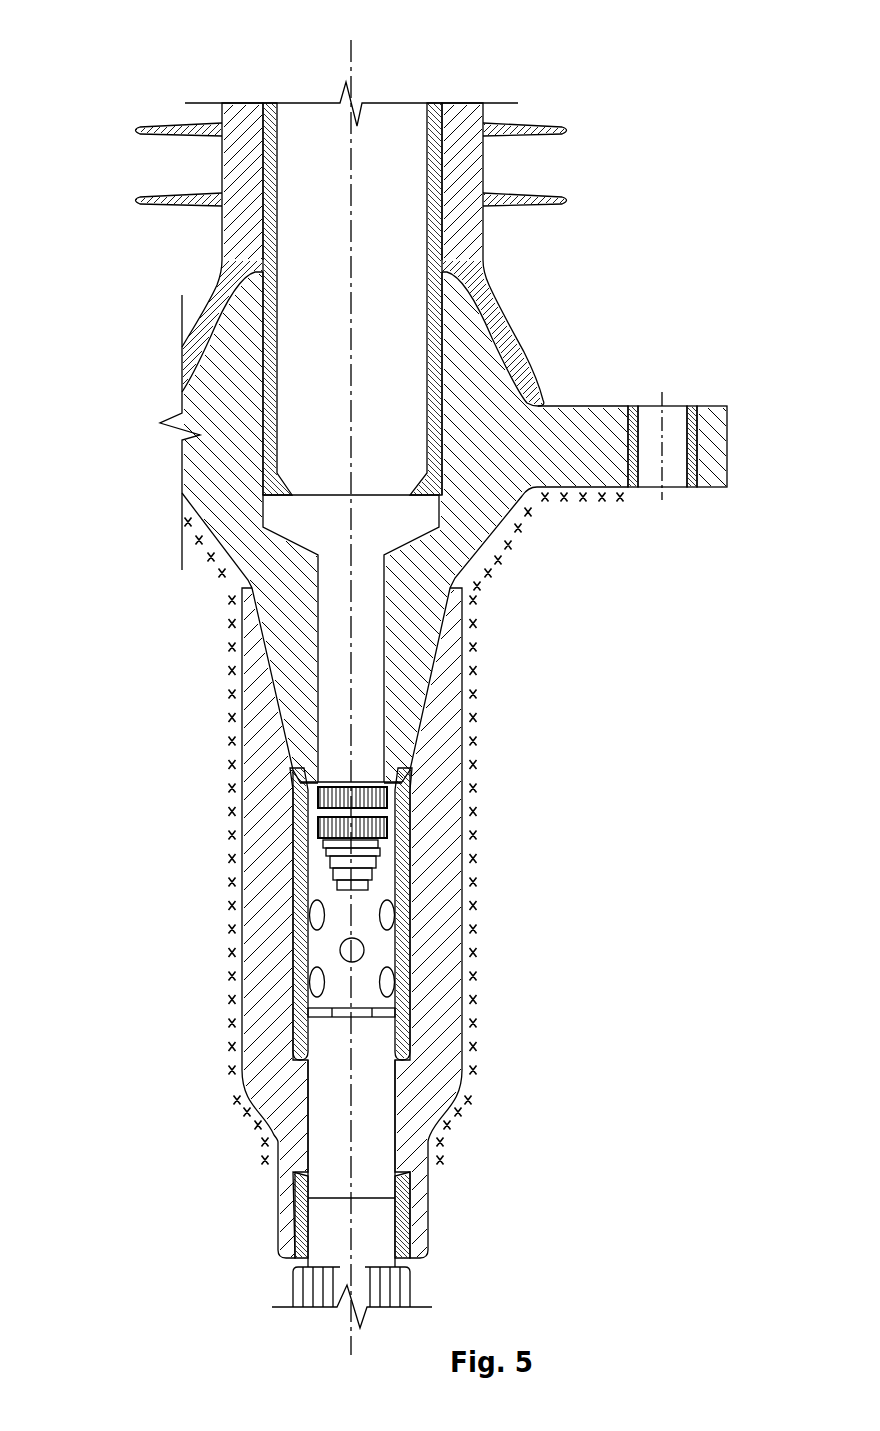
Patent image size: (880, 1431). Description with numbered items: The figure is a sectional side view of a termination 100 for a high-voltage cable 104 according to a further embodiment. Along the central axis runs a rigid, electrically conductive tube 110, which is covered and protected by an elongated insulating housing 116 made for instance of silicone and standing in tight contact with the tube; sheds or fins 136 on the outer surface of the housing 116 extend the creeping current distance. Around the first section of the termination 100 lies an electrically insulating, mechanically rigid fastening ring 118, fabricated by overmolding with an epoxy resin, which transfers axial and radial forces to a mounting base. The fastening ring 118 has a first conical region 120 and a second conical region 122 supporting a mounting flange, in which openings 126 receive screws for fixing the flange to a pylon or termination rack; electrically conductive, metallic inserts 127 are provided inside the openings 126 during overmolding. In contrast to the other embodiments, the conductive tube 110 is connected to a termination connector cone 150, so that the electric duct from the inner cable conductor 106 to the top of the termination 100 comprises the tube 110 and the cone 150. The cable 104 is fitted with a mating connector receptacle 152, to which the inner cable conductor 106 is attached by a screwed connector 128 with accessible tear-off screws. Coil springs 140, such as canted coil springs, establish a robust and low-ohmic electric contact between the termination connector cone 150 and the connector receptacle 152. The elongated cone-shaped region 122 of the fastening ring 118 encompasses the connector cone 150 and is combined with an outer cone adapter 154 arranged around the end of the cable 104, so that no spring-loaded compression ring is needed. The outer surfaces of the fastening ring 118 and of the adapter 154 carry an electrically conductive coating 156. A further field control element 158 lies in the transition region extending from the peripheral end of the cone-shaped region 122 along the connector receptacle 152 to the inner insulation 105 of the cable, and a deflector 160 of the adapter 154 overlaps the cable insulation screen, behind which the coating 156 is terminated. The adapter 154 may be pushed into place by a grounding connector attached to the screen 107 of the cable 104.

The termination 100 is at (132, 54).
The cable 104 is at (332, 1300).
The inner insulation 105 is at (333, 1137).
The inner cable conductor 106 is at (343, 1013).
The screen 107 is at (293, 1290).
The conductive tube 110 is at (268, 357).
The insulating housing 116 is at (463, 113).
The fastening ring 118 is at (492, 372).
The first conical region 120 is at (462, 326).
The second conical region 122 is at (466, 658).
The openings 126 is at (670, 447).
The inserts 127 is at (690, 490).
The screwed connector 128 is at (322, 952).
The sheds or fins 136 is at (553, 123).
The coil springs 140 is at (317, 797).
The termination connector cone 150 is at (337, 688).
The connector receptacle 152 is at (383, 865).
The outer cone adapter 154 is at (437, 942).
The electrically conductive coating 156 is at (503, 565).
The field control element 158 is at (403, 1020).
The deflector 160 is at (405, 1217).